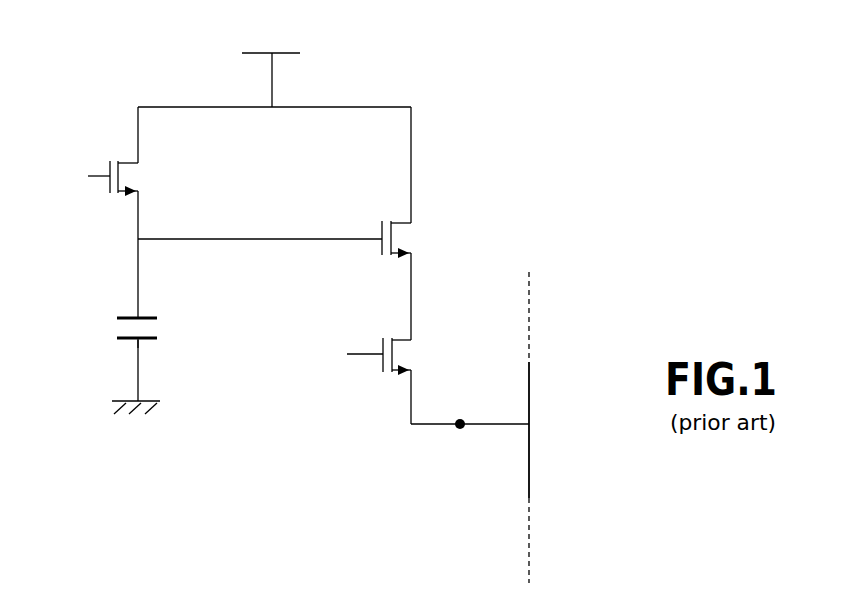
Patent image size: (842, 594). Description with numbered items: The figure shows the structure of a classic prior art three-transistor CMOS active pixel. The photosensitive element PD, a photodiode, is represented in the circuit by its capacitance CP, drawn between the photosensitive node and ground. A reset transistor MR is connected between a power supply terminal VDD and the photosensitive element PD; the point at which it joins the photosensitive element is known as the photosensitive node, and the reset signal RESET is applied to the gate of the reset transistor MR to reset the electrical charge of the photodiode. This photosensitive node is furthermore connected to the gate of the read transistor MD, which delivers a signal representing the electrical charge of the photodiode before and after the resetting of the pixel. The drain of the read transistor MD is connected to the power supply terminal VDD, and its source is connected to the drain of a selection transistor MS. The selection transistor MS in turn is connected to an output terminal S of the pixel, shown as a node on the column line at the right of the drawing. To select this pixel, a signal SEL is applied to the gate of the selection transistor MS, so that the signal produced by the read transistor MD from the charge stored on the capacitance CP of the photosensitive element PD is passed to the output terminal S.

The reset transistor MR is at (122, 176).
The read transistor MD is at (395, 238).
The selection transistor MS is at (396, 356).
The capacitance CP is at (160, 331).
The photosensitive element PD is at (127, 341).
The output terminal S is at (456, 426).
The power supply terminal VDD is at (271, 62).
The reset signal RESET is at (63, 176).
The selection signal SEL is at (340, 356).